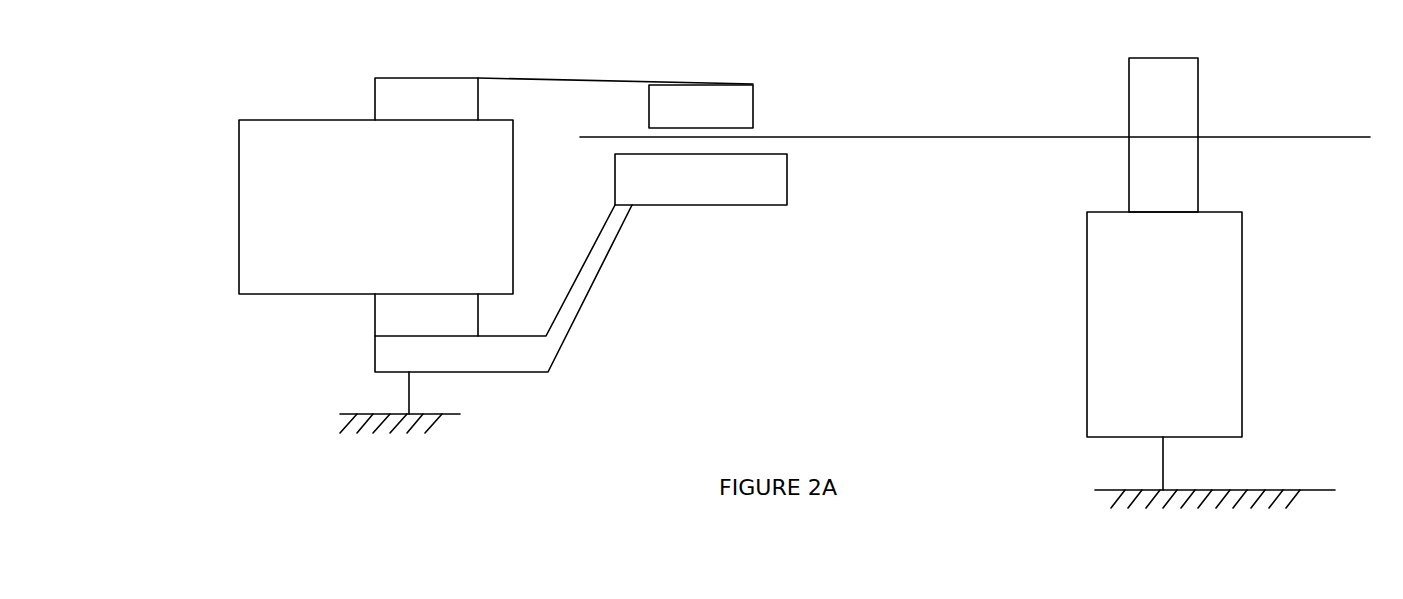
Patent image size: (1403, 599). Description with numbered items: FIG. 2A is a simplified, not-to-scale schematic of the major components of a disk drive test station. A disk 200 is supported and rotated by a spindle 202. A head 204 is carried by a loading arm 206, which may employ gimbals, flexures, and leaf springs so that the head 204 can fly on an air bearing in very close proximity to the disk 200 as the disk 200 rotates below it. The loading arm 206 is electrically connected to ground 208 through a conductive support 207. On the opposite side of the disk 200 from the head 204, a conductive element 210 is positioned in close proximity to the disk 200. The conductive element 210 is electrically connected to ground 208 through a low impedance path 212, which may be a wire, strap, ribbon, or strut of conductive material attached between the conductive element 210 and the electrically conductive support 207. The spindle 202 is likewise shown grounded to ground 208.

The disk 200 is at (1232, 133).
The spindle 202 is at (1232, 263).
The head 204 is at (735, 93).
The loading arm 206 is at (528, 76).
The conductive support 207 is at (274, 150).
The ground 208 is at (443, 414).
The conductive element 210 is at (752, 179).
The low impedance path 212 is at (580, 283).